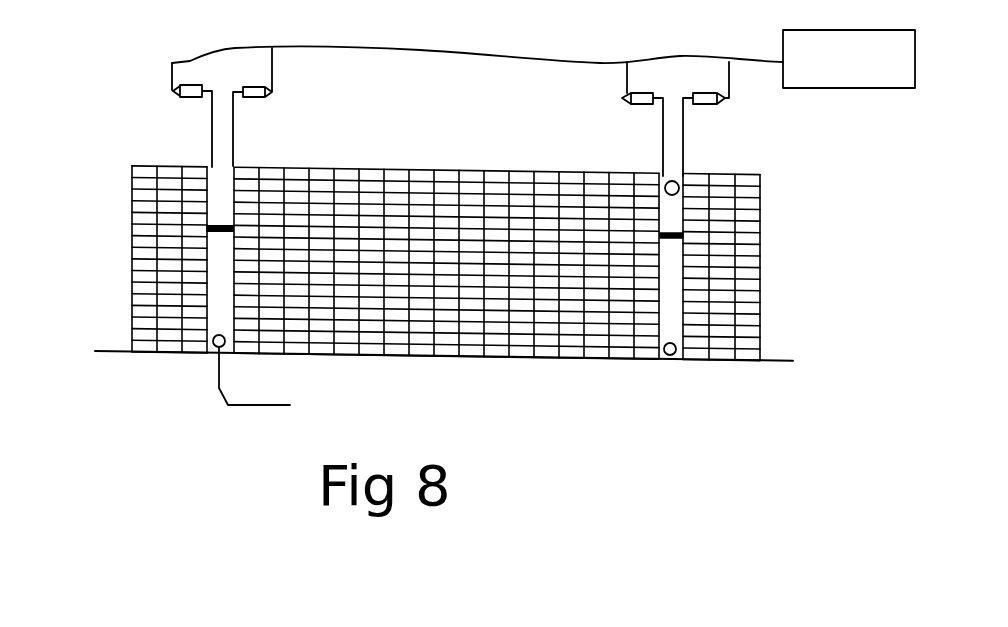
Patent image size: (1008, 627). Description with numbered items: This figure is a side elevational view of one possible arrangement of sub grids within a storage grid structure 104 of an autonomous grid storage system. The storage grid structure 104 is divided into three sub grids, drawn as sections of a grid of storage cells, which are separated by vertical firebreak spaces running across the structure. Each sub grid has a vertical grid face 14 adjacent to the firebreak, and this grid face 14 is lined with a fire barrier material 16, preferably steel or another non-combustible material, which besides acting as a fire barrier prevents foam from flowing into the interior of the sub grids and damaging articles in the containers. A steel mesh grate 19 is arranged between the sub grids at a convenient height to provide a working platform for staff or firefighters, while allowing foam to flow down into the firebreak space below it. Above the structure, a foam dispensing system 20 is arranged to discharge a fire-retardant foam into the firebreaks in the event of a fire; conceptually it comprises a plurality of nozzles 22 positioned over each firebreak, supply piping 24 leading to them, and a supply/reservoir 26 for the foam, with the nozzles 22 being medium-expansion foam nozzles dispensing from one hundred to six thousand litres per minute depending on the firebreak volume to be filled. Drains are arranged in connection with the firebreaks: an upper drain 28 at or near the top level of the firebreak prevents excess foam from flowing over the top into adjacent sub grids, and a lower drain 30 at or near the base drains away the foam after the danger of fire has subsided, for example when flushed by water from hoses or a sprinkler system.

The vertical grid face 14 is at (223, 302).
The fire barrier material 16 is at (234, 208).
The steel mesh grate 19 is at (219, 231).
The foam dispensing system 20 is at (173, 118).
The nozzles 22 is at (253, 87).
The supply piping 24 is at (233, 120).
The supply/reservoir 26 is at (858, 78).
The upper drain 28 is at (679, 191).
The lower drain 30 is at (670, 355).
The storage grid structure 104 is at (786, 327).